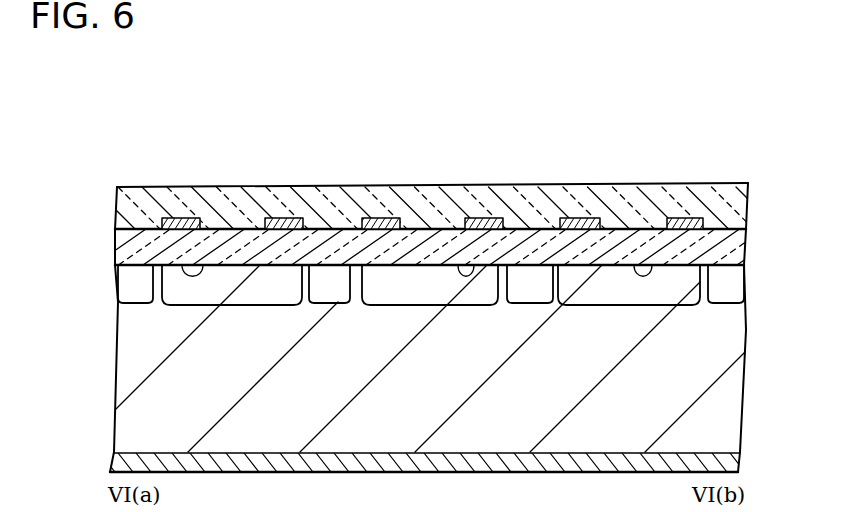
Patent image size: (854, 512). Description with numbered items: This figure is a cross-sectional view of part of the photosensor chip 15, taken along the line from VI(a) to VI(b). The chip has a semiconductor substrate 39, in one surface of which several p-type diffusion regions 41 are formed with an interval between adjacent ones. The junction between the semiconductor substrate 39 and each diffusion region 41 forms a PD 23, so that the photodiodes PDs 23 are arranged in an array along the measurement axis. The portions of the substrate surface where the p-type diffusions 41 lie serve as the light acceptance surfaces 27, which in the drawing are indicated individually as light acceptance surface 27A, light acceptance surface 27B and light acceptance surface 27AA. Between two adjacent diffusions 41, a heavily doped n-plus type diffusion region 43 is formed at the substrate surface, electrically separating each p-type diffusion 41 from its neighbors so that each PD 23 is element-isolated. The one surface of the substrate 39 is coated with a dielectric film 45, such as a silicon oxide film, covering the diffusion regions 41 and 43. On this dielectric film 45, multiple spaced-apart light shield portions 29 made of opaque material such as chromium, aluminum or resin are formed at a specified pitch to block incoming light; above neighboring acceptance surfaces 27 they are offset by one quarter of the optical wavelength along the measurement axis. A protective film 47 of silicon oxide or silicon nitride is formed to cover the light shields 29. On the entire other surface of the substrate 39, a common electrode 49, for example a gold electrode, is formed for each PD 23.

The photosensor chip 15 is at (753, 160).
The PD 23 is at (245, 307).
The light acceptance surface 27 is at (446, 194).
The contact opening 27A is at (203, 265).
The contact opening 27B is at (458, 265).
The contact opening 27AA is at (634, 265).
The light shield portion 29 is at (182, 217).
The semiconductor substrate 39 is at (733, 380).
The p-type diffusion region 41 is at (195, 295).
The n+ type diffusion region 43 is at (122, 292).
The dielectric film 45 is at (745, 253).
The protective film 47 is at (747, 213).
The common electrode 49 is at (730, 463).